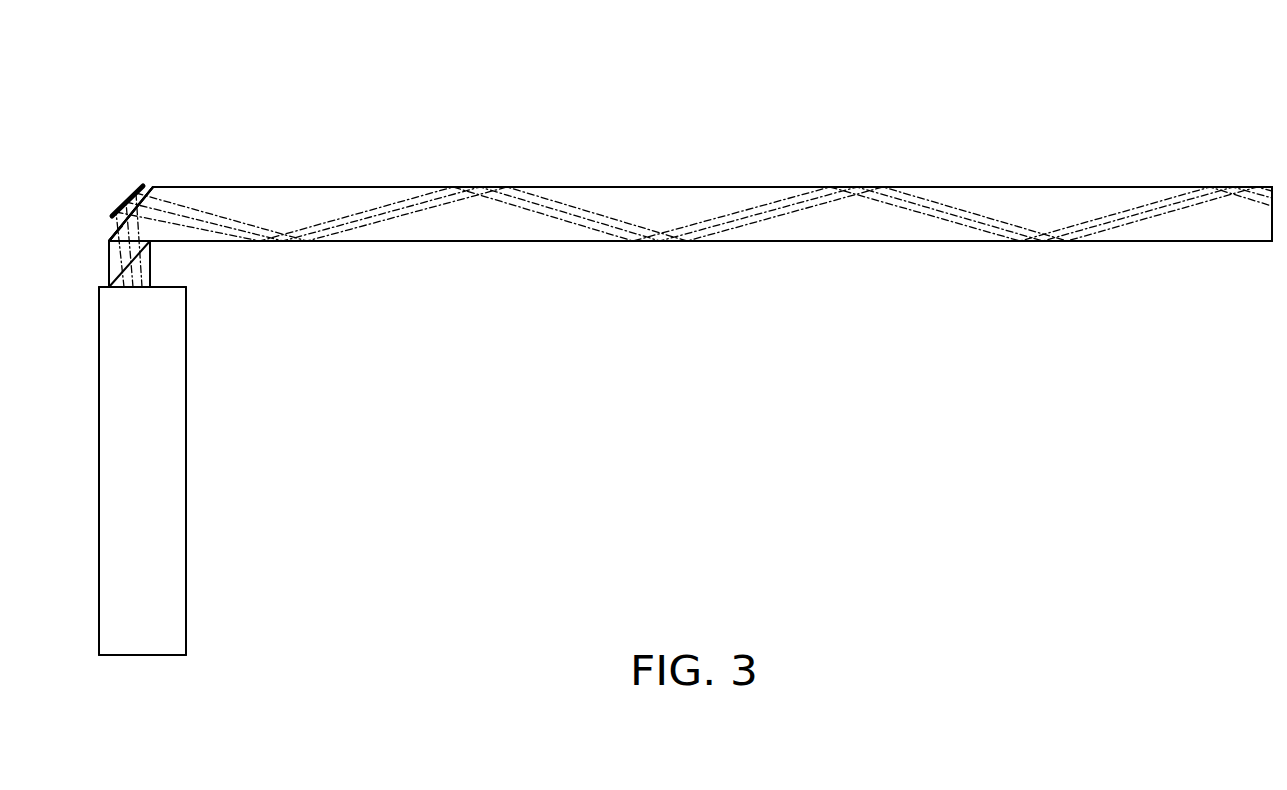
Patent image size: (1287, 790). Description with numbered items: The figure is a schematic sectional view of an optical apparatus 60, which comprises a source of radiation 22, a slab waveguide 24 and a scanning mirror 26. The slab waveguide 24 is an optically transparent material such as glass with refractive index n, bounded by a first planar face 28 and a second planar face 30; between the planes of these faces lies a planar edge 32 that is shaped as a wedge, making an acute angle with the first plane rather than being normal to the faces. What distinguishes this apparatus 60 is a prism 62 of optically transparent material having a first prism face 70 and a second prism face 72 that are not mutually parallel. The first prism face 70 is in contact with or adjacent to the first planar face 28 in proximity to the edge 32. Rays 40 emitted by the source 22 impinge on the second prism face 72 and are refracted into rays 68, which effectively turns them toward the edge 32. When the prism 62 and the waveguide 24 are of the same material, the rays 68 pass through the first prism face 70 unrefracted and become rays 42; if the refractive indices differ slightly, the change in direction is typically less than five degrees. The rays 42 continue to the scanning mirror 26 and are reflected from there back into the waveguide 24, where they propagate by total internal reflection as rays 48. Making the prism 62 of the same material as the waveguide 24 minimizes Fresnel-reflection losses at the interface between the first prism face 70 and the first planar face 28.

The optical apparatus 60 is at (101, 102).
The source of radiation 22 is at (186, 505).
The slab waveguide 24 is at (690, 212).
The scanning mirror 26 is at (121, 208).
The first planar face 28 is at (1210, 242).
The second planar face 30 is at (1175, 187).
The planar edge 32 is at (157, 187).
The rays 40 is at (150, 274).
The rays 42 is at (112, 232).
The rays 48 is at (220, 217).
The prism 62 is at (113, 268).
The rays 68 is at (111, 258).
The first prism face 70 is at (155, 243).
The second prism face 72 is at (110, 284).